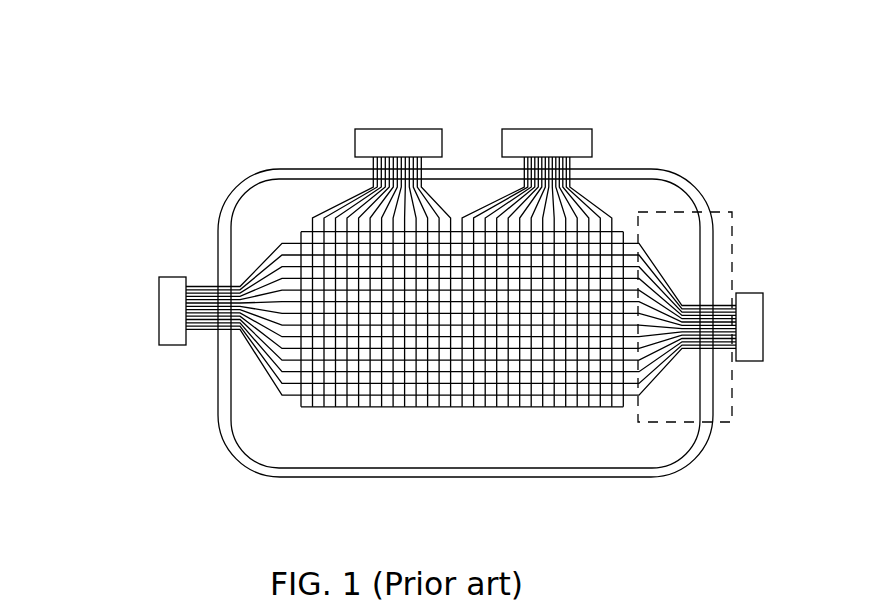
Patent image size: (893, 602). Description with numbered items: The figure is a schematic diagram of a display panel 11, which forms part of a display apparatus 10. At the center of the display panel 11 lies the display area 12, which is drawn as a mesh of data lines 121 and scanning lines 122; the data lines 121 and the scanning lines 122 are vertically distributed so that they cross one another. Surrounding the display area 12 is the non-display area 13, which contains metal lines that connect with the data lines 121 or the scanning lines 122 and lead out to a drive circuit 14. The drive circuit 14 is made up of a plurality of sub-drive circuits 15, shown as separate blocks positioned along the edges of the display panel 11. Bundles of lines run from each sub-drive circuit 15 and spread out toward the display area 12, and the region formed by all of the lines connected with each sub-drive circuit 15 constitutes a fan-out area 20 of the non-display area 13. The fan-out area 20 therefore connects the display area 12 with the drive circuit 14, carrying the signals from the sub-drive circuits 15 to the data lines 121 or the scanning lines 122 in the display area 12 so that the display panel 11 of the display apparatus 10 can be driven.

The display apparatus 10 is at (409, 258).
The display panel 11 is at (262, 178).
The display area 12 is at (328, 309).
The data lines 121 is at (304, 385).
The scanning lines 122 is at (303, 238).
The non-display area 13 is at (627, 207).
The drive circuit 14 is at (462, 118).
The sub-drive circuits 15 is at (397, 142).
The fan-out area 20 is at (658, 427).